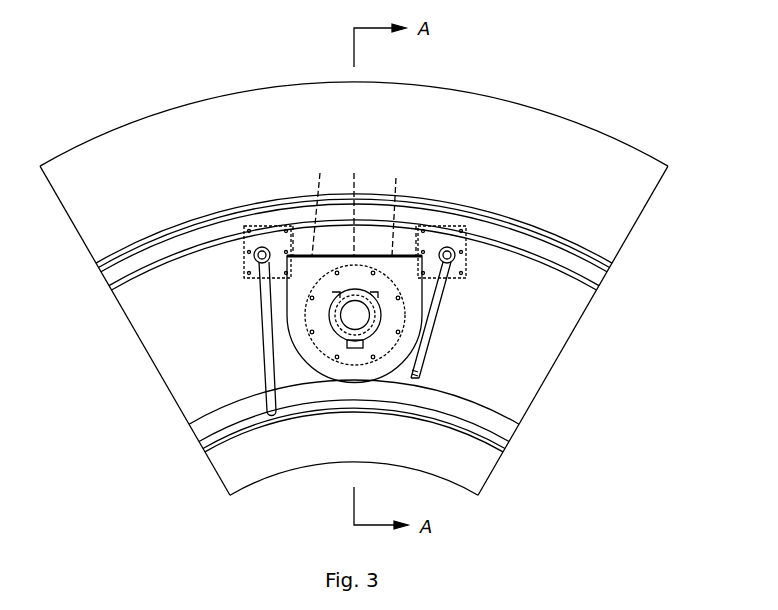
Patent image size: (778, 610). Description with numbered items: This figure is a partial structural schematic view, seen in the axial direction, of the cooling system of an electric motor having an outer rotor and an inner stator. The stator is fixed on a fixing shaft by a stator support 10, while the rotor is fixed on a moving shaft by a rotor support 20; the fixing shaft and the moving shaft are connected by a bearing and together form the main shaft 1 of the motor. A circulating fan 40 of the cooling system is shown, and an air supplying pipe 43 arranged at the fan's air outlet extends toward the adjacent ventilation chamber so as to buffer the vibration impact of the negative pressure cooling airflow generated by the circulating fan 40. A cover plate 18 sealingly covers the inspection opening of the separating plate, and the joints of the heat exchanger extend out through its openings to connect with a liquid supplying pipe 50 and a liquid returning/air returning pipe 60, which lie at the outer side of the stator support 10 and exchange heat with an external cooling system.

The main shaft 1 is at (214, 473).
The stator support 10 is at (165, 347).
The rotor support 20 is at (219, 95).
The circulating fan 40 is at (317, 370).
The air supplying pipe 43 is at (383, 240).
The cover plate 18 is at (467, 263).
The liquid supplying pipe 50 is at (264, 323).
The liquid returning/air returning pipe 60 is at (441, 293).